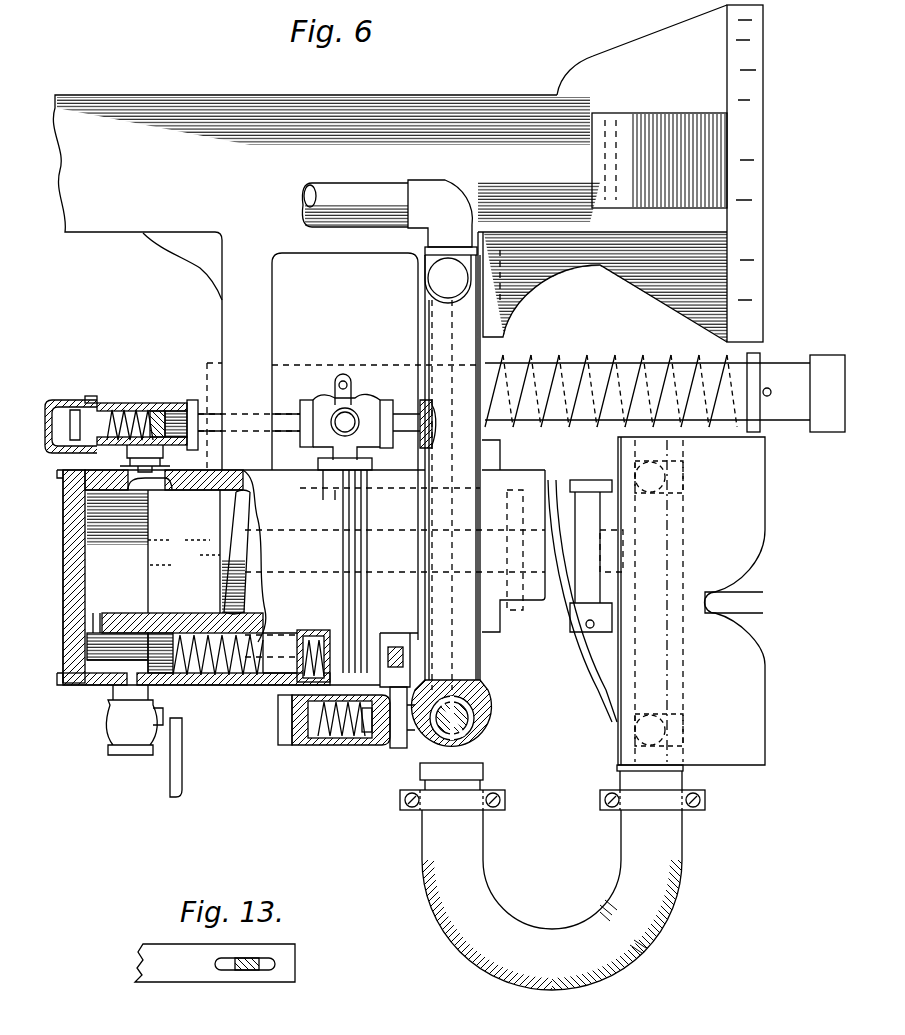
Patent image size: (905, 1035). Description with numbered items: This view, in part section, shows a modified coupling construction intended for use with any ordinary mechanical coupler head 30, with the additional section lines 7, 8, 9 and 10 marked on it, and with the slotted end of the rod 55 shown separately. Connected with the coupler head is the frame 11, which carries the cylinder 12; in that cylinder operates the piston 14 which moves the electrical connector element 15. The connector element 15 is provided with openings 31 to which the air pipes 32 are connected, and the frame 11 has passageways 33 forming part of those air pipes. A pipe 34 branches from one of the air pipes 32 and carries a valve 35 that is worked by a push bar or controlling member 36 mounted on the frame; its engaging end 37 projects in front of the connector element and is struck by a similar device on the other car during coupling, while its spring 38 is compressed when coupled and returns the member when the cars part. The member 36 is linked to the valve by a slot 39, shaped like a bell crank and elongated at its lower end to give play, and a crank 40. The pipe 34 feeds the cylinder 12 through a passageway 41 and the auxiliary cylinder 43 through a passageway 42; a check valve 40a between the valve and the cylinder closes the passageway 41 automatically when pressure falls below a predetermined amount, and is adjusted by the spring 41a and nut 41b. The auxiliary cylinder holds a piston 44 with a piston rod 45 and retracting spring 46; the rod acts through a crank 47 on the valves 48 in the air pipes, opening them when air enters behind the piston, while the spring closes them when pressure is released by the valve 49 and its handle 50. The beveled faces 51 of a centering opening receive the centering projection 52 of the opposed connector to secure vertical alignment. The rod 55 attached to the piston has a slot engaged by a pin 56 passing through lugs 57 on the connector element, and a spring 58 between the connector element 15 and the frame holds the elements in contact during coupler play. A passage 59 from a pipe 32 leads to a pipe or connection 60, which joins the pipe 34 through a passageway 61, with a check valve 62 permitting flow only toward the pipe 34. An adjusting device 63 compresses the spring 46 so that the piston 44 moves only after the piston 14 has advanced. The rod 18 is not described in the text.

In FIG. 6, the section line 7— 7 is at (497, 90).
In FIG. 6, the section line 8— 8 is at (345, 395).
In FIG. 6, the section line 9— 9 is at (845, 848).
In FIG. 6, the section line 10— 10 is at (78, 348).
In FIG. 6, the frame 11 is at (270, 338).
In FIG. 6, the cylinder 12 is at (173, 613).
In FIG. 6, the piston 14 is at (193, 577).
In FIG. 6, the electrical connector element 15 is at (680, 565).
In FIG. 6, the connecting rod 18 is at (259, 563).
In FIG. 6, the mechanical coupler head 30 is at (643, 96).
In FIG. 6, the openings 31 is at (668, 477).
In FIG. 6, the air pipes 32 is at (352, 186).
In FIG. 6, the passageways 33 is at (458, 328).
In FIG. 6, the pipe 34 is at (386, 448).
In FIG. 6, the valve 35 is at (352, 410).
In FIG. 6, the push bar or controlling member 36 is at (330, 368).
In FIG. 6, the engaging end 37 is at (828, 430).
In FIG. 6, the spring 38 is at (574, 372).
In FIG. 6, the slot 39 is at (374, 398).
In FIG. 6, the crank 40 is at (335, 392).
In FIG. 6, the check valve 40a is at (152, 420).
In FIG. 6, the passageway 41 is at (120, 488).
In FIG. 6, the spring 41a is at (108, 418).
In FIG. 6, the nut 41b is at (73, 420).
In FIG. 6, the passageway 42 is at (94, 613).
In FIG. 6, the auxiliary cylinder 43 is at (111, 647).
In FIG. 6, the piston 44 is at (158, 686).
In FIG. 6, the piston rod 45 is at (232, 683).
In FIG. 6, the retracting spring 46 is at (205, 680).
In FIG. 6, the crank 47 is at (482, 682).
In FIG. 6, the valves 48 is at (484, 714).
In FIG. 6, the valve 49 is at (132, 735).
In FIG. 6, the handle 50 is at (170, 790).
In FIG. 6, the beveled faces 51 is at (763, 560).
In FIG. 6, the centering projection 52 is at (768, 606).
In FIG. 6, the rod 55 is at (248, 550).
In FIG. 13, the rod 55 is at (215, 963).
In FIG. 6, the pin 56 is at (590, 480).
In FIG. 13, the pin 56 is at (246, 970).
In FIG. 6, the lugs 57 is at (567, 493).
In FIG. 6, the spring 58 is at (582, 606).
In FIG. 6, the passage 59 is at (412, 762).
In FIG. 6, the pipe or connection 60 is at (357, 570).
In FIG. 6, the passageway 61 is at (325, 438).
In FIG. 6, the check valve 62 is at (355, 745).
In FIG. 6, the adjusting device 63 is at (389, 645).